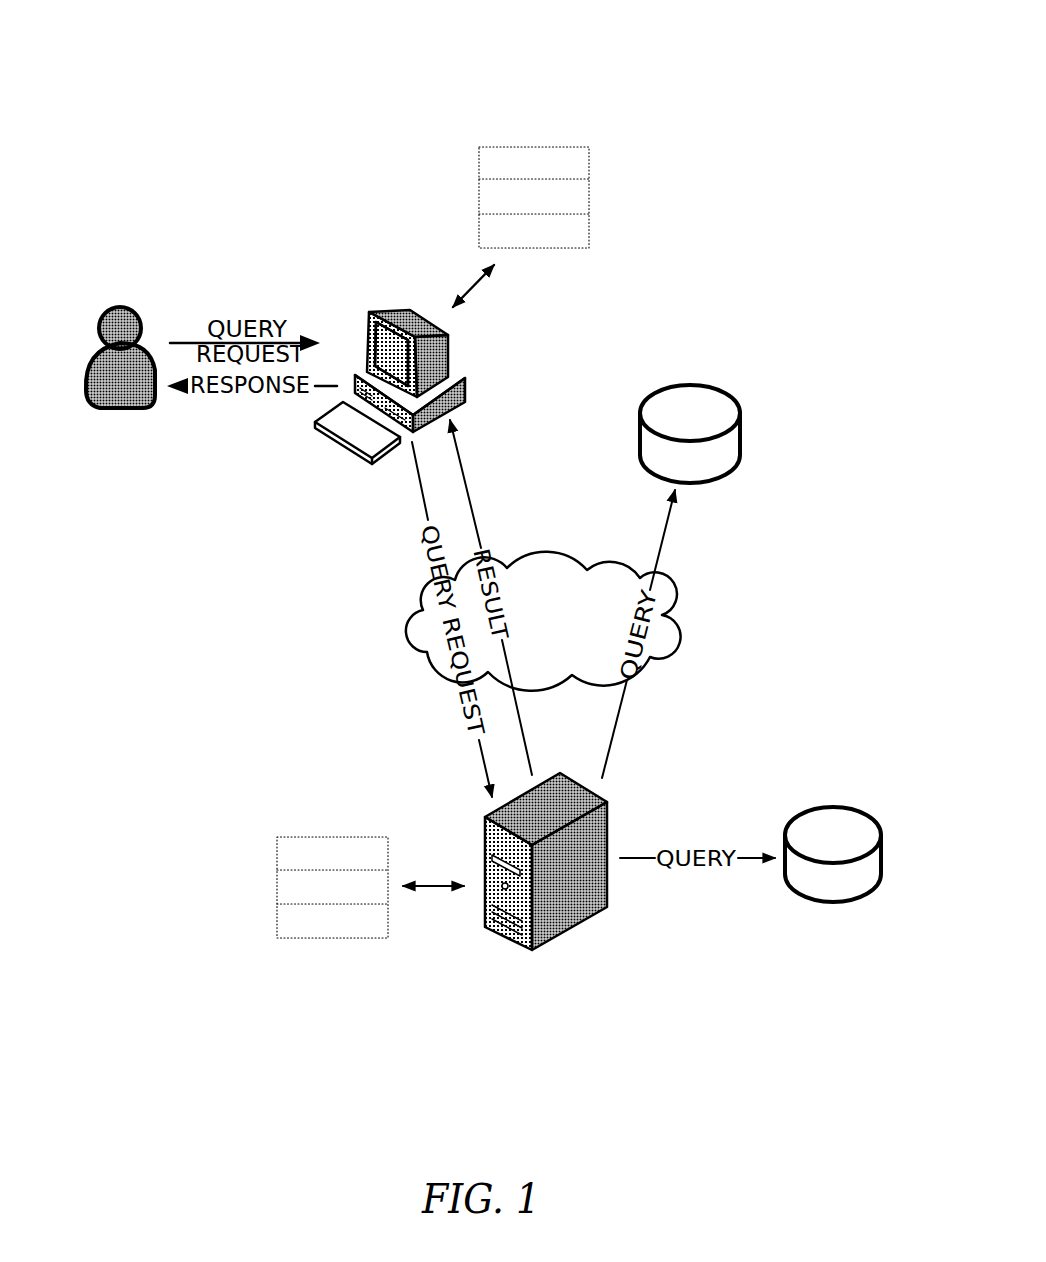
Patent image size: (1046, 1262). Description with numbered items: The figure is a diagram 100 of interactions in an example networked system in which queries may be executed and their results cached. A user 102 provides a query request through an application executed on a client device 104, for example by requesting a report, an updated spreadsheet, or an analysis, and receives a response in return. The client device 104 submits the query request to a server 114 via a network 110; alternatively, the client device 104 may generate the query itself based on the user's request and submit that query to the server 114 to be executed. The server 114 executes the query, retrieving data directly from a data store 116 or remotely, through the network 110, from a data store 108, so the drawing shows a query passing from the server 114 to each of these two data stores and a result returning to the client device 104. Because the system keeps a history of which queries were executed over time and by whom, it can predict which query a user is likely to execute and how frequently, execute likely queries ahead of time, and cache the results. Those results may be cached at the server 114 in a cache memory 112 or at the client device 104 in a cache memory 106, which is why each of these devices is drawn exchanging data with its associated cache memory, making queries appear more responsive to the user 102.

The diagram 100 is at (747, 50).
The user 102 is at (130, 281).
The client device 104 is at (396, 280).
The cache memory 106 is at (528, 120).
The data store 108 is at (663, 376).
The network 110 is at (398, 603).
The cache memory 112 is at (290, 813).
The server 114 is at (587, 942).
The data store 116 is at (824, 914).